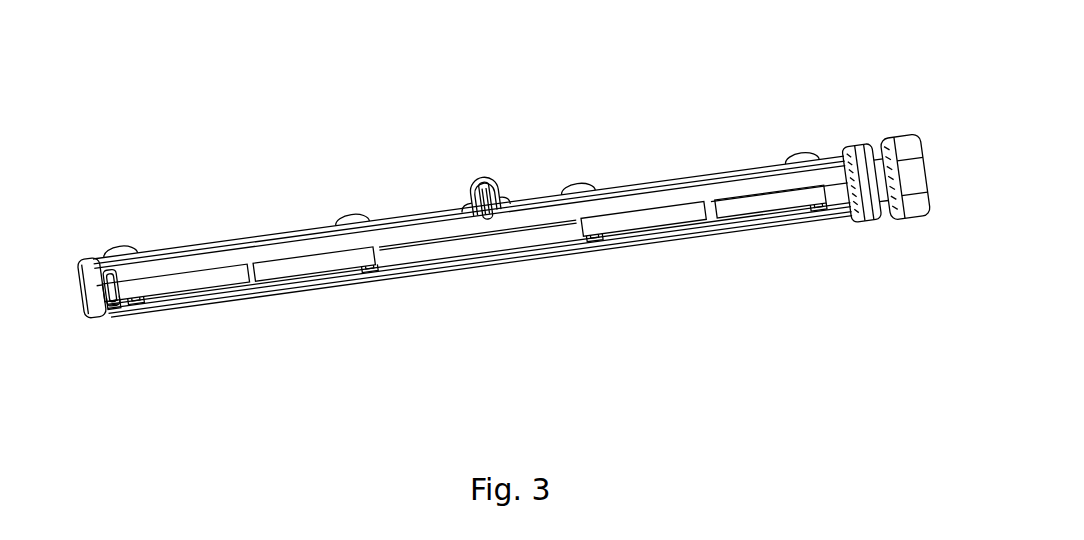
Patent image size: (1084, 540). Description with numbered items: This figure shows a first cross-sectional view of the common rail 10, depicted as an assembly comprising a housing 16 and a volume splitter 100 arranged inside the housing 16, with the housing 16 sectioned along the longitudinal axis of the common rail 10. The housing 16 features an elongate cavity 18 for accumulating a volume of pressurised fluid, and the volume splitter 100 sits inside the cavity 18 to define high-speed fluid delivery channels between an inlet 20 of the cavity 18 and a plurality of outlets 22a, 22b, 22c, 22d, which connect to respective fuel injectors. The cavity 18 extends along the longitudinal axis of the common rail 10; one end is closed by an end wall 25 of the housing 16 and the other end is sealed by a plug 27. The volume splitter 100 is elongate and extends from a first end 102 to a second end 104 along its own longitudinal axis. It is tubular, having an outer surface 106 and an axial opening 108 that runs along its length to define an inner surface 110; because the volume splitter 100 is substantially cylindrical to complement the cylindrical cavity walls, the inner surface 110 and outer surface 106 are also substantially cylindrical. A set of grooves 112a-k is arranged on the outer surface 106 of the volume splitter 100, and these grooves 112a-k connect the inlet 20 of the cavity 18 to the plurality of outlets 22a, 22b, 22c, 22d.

The common rail 10 is at (305, 190).
The housing 16 is at (728, 175).
The cavity 18 is at (240, 257).
The inlet 20 is at (482, 216).
The outlet 22a is at (140, 298).
The outlet 22b is at (373, 272).
The outlet 22c is at (601, 239).
The outlet 22d is at (833, 209).
The end wall 25 is at (93, 285).
The plug 27 is at (866, 182).
The volume splitter 100 is at (545, 243).
The first end 102 is at (113, 302).
The second end 104 is at (860, 188).
The outer surface 106 is at (273, 268).
The axial opening 108 is at (109, 314).
The inner surface 110 is at (113, 292).
The set of grooves 112a-k is at (407, 232).